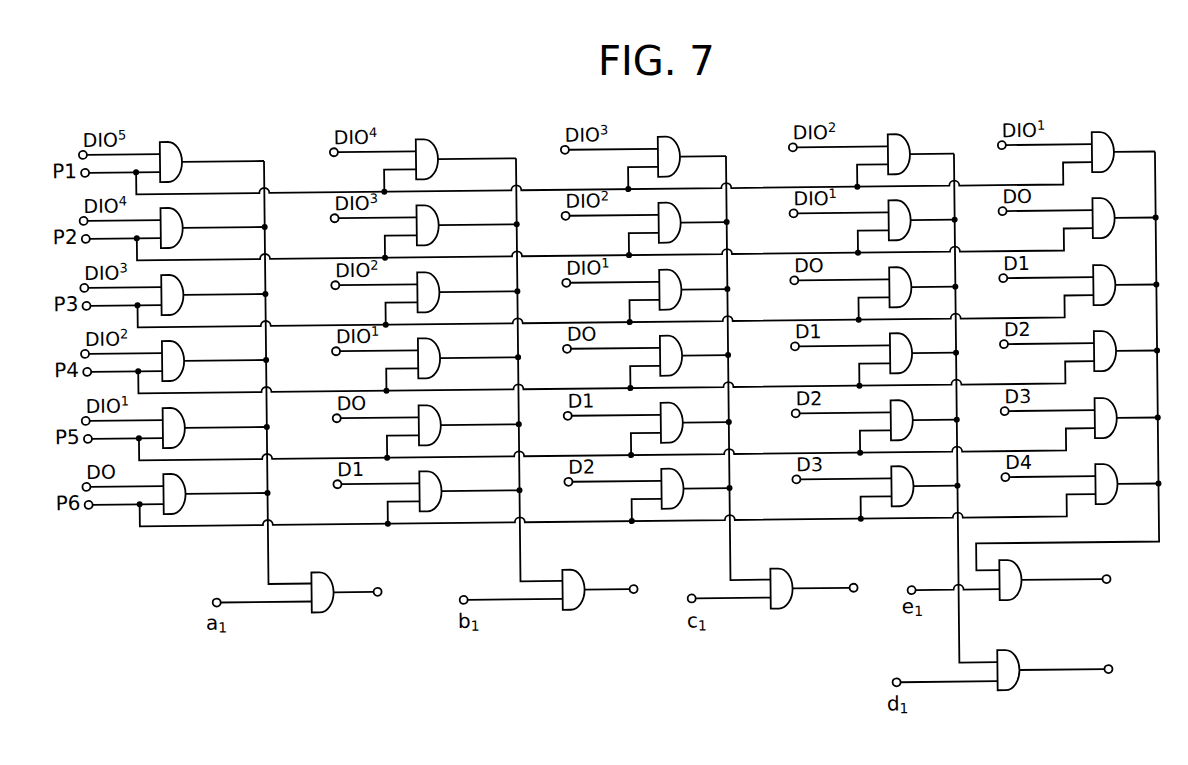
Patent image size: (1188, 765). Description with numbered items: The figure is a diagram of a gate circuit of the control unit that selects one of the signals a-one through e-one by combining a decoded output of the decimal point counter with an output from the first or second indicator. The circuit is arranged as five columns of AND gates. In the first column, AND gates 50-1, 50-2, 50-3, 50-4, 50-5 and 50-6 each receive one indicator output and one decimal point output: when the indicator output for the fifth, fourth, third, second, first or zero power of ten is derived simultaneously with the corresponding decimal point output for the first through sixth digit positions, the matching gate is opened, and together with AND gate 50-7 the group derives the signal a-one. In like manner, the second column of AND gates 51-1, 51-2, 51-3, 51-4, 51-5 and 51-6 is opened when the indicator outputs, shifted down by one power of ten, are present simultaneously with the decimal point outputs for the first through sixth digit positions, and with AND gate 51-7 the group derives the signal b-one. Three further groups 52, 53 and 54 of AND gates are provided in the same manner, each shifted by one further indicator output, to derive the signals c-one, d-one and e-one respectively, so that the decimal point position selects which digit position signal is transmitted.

The AND gate 50-1 is at (172, 145).
The AND gate 50-2 is at (172, 211).
The AND gate 50-3 is at (172, 278).
The AND gate 50-4 is at (172, 344).
The AND gate 50-5 is at (172, 411).
The AND gate 50-6 is at (172, 477).
The AND gate 50-7 is at (320, 579).
The AND gate 51-1 is at (428, 145).
The AND gate 51-2 is at (428, 211).
The AND gate 51-3 is at (428, 278).
The AND gate 51-4 is at (428, 344).
The AND gate 51-5 is at (428, 411).
The AND gate 51-6 is at (428, 477).
The AND gate 51-7 is at (607, 581).
The group of AND gates 52 is at (645, 115).
The group of AND gates 53 is at (875, 120).
The group of AND gates 54 is at (1077, 120).